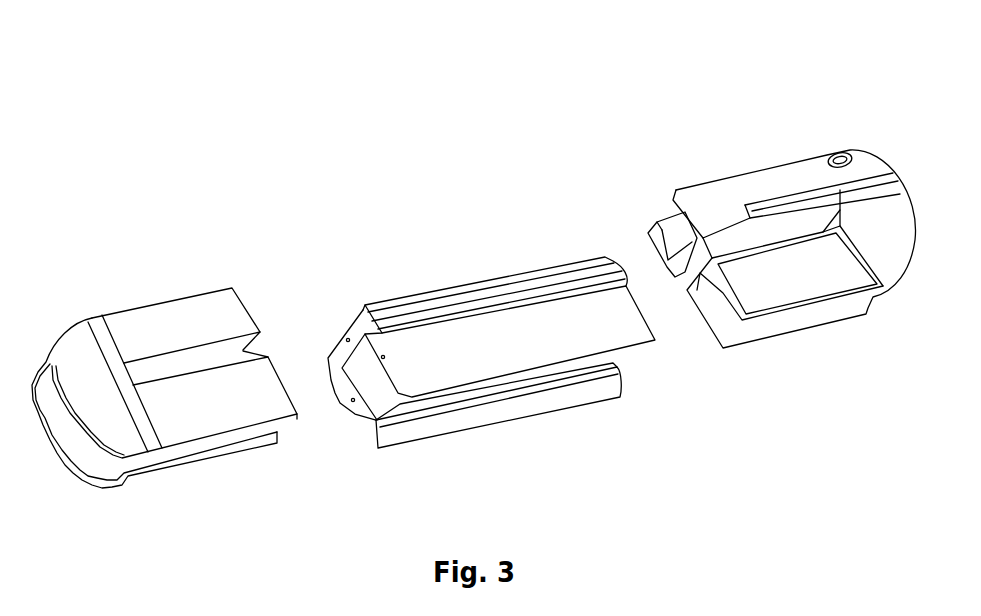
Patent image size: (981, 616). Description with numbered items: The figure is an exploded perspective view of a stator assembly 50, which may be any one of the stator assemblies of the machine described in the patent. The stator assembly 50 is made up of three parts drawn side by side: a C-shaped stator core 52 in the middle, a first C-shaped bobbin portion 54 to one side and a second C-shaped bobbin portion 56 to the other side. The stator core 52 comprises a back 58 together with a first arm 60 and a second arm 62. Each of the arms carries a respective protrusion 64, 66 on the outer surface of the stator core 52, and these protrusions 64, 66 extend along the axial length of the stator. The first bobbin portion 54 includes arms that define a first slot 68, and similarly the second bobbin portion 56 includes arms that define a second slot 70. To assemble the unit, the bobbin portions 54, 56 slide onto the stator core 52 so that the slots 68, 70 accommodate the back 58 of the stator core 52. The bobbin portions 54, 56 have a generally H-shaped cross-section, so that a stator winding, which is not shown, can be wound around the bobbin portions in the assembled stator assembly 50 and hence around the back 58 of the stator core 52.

The stator assembly 50 is at (368, 133).
The stator core 52 is at (538, 265).
The first bobbin portion 54 is at (178, 322).
The second bobbin portion 56 is at (723, 200).
The back 58 is at (353, 333).
The first arm 60 is at (355, 414).
The second arm 62 is at (616, 324).
The protrusion 64 is at (335, 401).
The protrusion 66 is at (468, 307).
The first slot 68 is at (240, 345).
The second slot 70 is at (658, 271).